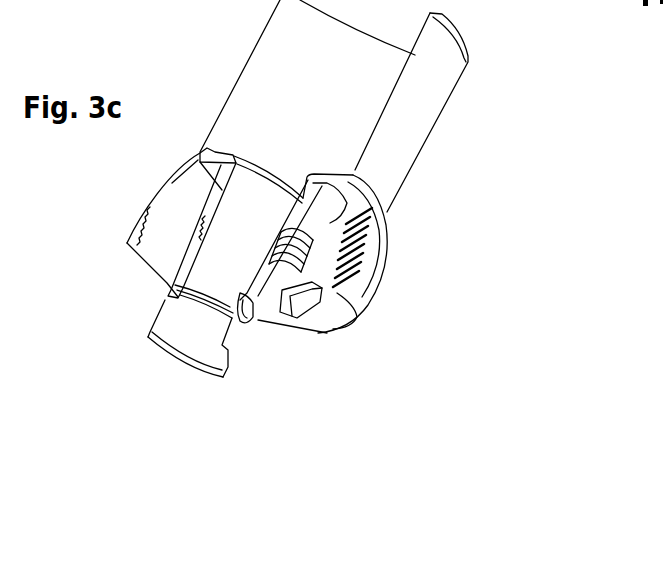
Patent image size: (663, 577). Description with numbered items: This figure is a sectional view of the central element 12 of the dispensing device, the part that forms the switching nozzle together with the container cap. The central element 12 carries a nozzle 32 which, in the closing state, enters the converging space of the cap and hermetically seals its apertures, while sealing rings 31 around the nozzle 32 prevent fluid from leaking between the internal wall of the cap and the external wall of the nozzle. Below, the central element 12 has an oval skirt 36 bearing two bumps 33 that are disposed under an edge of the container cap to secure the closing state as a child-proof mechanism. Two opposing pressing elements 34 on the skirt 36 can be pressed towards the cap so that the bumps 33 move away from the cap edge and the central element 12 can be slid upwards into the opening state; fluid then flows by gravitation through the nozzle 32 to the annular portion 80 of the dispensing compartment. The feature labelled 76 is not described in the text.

The annular portion 80 is at (433, 83).
The central element 12 is at (458, 181).
The sealing rings 31 is at (305, 248).
The pressing elements 34 is at (360, 277).
The skirt 36 is at (365, 305).
The bumps 33 is at (303, 323).
The clip 76 is at (262, 318).
The nozzle 32 is at (238, 348).